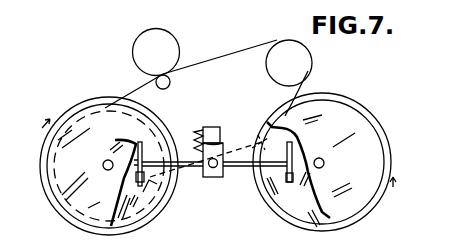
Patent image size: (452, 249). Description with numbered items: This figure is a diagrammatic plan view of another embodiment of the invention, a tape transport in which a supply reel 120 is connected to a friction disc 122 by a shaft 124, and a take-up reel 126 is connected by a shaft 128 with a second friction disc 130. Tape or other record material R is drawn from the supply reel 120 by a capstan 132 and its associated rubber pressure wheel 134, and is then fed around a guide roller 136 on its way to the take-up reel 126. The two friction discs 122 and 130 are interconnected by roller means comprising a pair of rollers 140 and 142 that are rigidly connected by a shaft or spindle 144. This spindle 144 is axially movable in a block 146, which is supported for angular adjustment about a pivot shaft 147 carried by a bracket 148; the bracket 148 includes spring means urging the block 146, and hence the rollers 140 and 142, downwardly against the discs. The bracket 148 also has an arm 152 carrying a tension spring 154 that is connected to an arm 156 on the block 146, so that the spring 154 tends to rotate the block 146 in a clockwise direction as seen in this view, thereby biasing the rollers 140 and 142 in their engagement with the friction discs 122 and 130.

The supply reel 120 is at (78, 128).
The friction disc 122 is at (140, 222).
The shaft 124 is at (107, 170).
The take-up reel 126 is at (362, 130).
The shaft 128 is at (325, 163).
The friction disc 130 is at (270, 203).
The capstan 132 is at (171, 82).
The rubber pressure wheel 134 is at (140, 40).
The guide roller 136 is at (306, 70).
The record material R is at (217, 58).
The roller 140 is at (115, 141).
The roller 142 is at (297, 181).
The shaft or spindle 144 is at (241, 167).
The block 146 is at (202, 177).
The pivot shaft 147 is at (214, 177).
The bracket 148 is at (214, 127).
The arm 152 is at (197, 129).
The tension spring 154 is at (219, 144).
The arm 156 is at (142, 152).